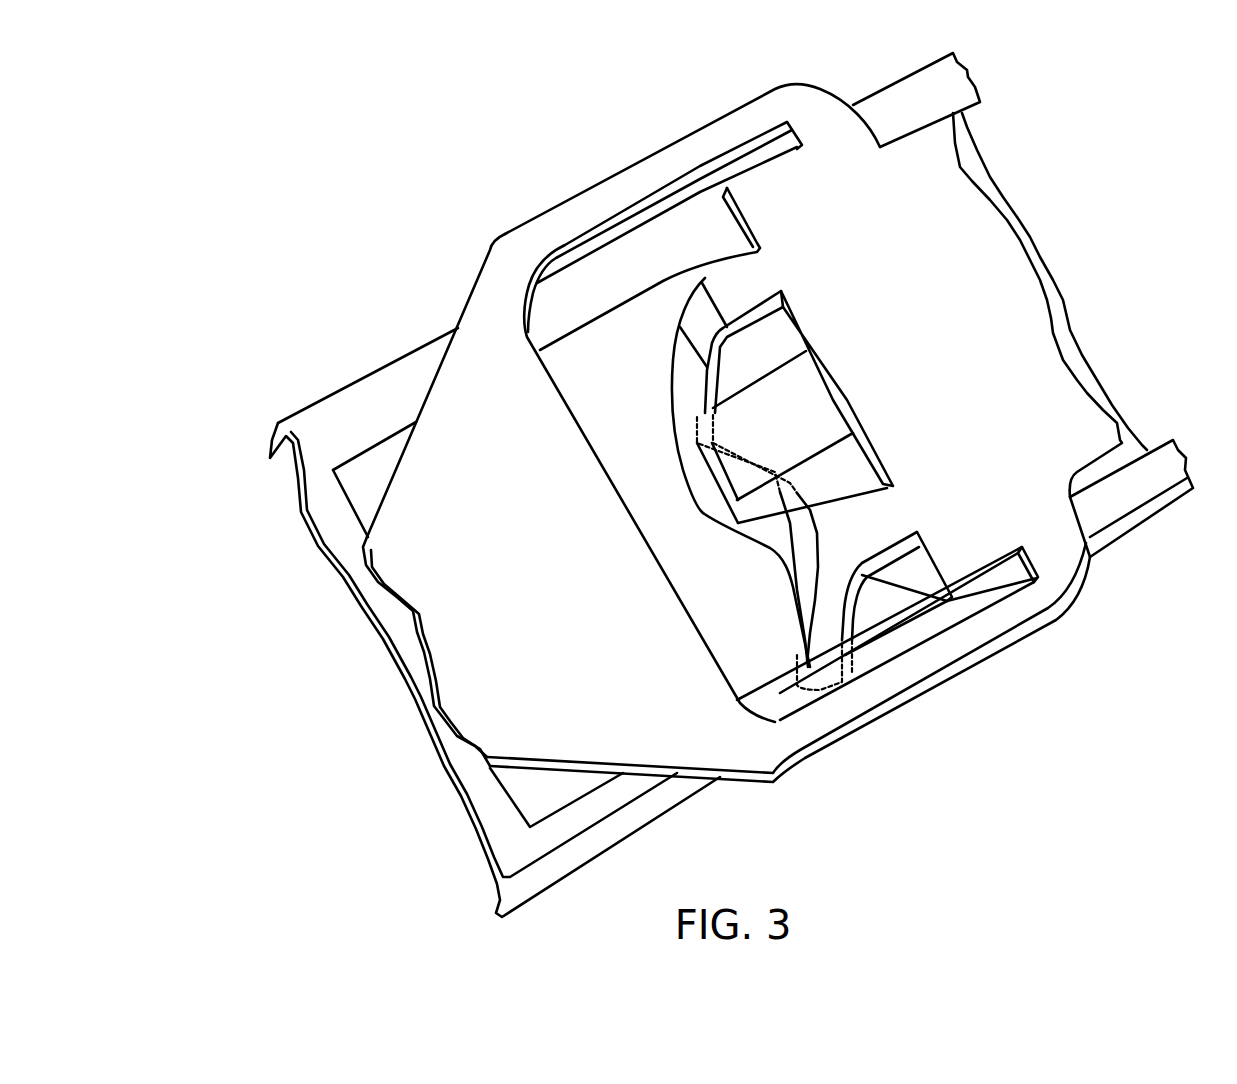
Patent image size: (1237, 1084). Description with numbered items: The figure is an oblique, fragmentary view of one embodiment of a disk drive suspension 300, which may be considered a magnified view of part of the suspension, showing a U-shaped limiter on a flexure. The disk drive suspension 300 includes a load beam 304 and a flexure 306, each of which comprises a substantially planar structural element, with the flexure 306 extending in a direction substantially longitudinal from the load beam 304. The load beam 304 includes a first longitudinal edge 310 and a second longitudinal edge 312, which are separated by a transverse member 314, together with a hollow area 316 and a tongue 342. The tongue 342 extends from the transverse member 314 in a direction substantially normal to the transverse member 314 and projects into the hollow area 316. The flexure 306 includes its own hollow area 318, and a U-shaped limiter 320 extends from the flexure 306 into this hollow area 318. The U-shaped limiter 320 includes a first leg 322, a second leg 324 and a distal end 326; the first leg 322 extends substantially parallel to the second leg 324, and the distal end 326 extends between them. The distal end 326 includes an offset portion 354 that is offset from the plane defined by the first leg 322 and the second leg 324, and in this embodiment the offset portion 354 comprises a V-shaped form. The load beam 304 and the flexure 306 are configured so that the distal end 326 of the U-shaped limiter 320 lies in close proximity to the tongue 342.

The disk drive suspension 300 is at (243, 738).
The load beam 304 is at (323, 440).
The flexure 306 is at (465, 573).
The first longitudinal edge 310 is at (937, 90).
The second longitudinal edge 312 is at (1140, 485).
The transverse member 314 is at (1093, 370).
The hollow area 316 is at (357, 470).
The hollow area 318 is at (665, 297).
The U-shaped limiter 320 is at (683, 430).
The first leg 322 is at (823, 613).
The second leg 324 is at (677, 370).
The distal end 326 is at (790, 530).
The tongue 342 is at (883, 495).
The offset portion 354 is at (790, 417).